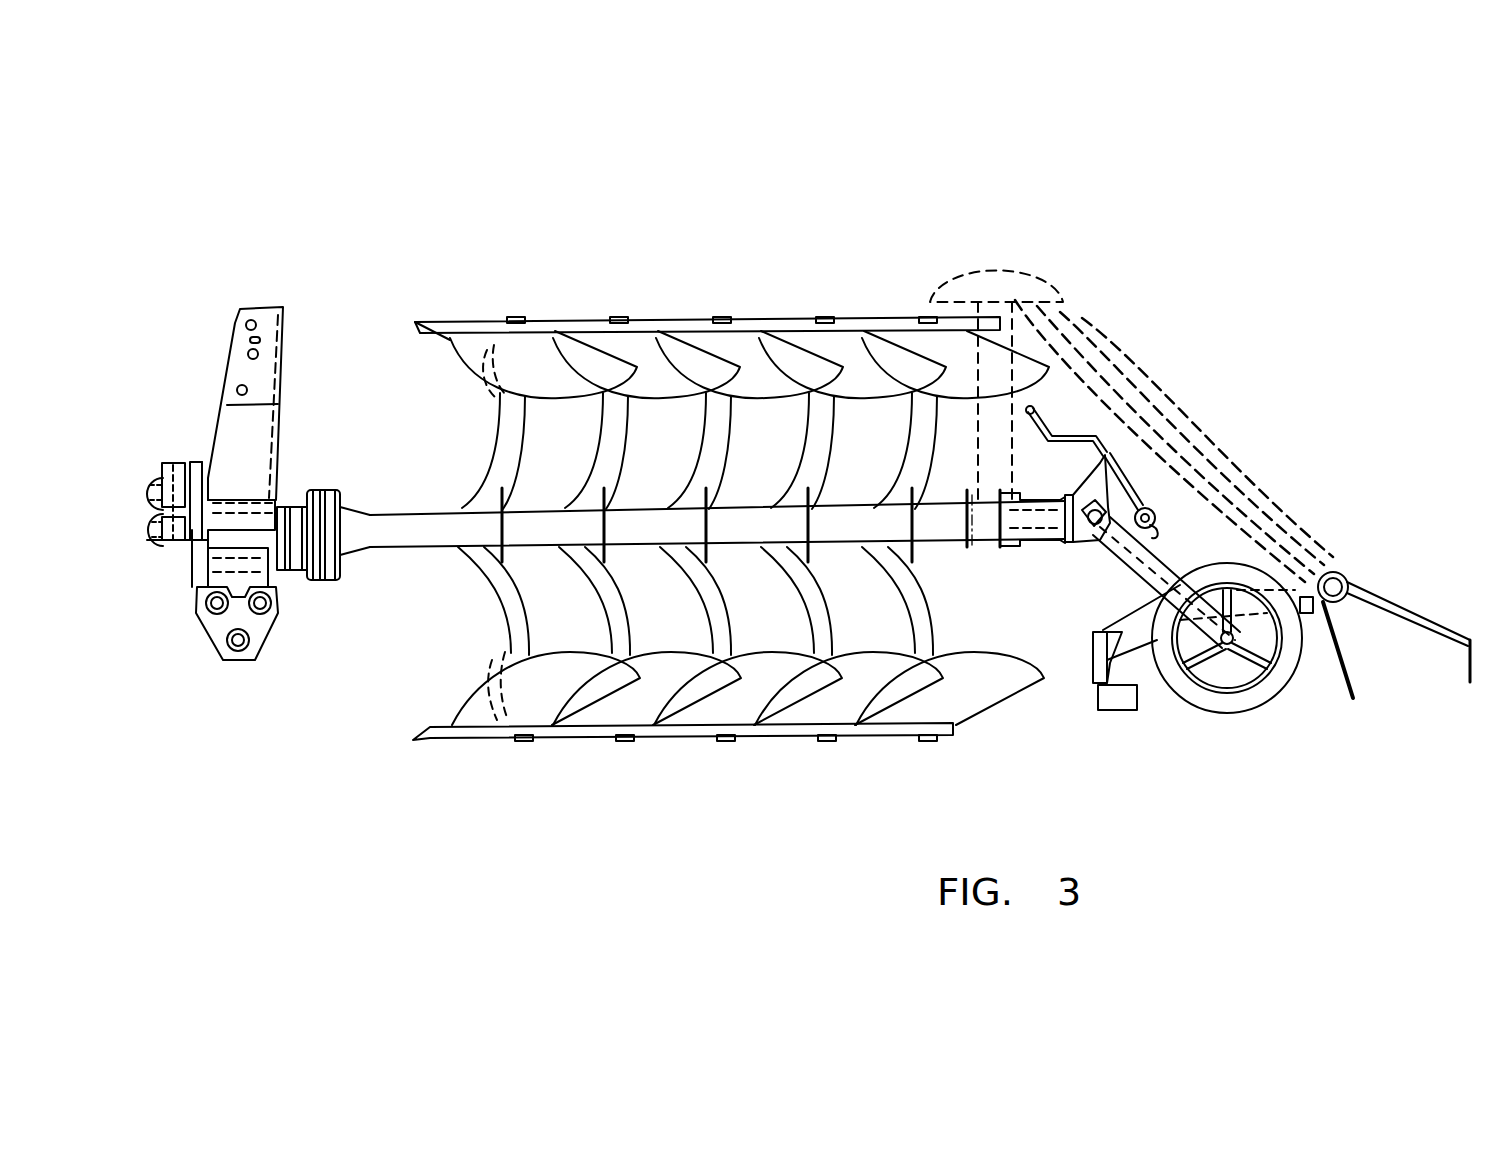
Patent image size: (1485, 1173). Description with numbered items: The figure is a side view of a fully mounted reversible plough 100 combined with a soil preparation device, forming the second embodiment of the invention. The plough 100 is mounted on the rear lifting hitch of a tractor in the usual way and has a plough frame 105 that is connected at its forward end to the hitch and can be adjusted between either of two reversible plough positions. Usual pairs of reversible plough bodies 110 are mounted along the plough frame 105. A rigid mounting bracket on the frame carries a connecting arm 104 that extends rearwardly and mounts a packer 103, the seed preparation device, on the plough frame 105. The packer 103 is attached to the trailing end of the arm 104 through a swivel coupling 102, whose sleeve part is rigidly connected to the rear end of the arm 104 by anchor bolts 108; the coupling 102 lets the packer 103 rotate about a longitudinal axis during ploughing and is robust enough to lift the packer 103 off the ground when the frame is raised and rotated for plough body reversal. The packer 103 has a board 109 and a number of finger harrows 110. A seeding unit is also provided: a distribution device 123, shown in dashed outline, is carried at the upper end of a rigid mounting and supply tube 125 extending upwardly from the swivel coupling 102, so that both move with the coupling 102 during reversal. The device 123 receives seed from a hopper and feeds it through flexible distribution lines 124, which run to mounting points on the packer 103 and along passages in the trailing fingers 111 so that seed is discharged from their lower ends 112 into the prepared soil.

The fully mounted reversible plough 100 is at (737, 303).
The swivel coupling 102 is at (1050, 543).
The packer 103 is at (1233, 548).
The connecting arm 104 is at (933, 528).
The plough frame 105 is at (740, 512).
The anchor bolts 108 is at (975, 530).
The board 109 is at (1108, 702).
The reversible plough bodies 110 is at (645, 697).
The trailing fingers 111 is at (1395, 602).
The lower ends 112 is at (1465, 688).
The distribution device 123 is at (1022, 272).
The flexible distribution lines 124 is at (1190, 400).
The mounting and supply tube 125 is at (1002, 407).